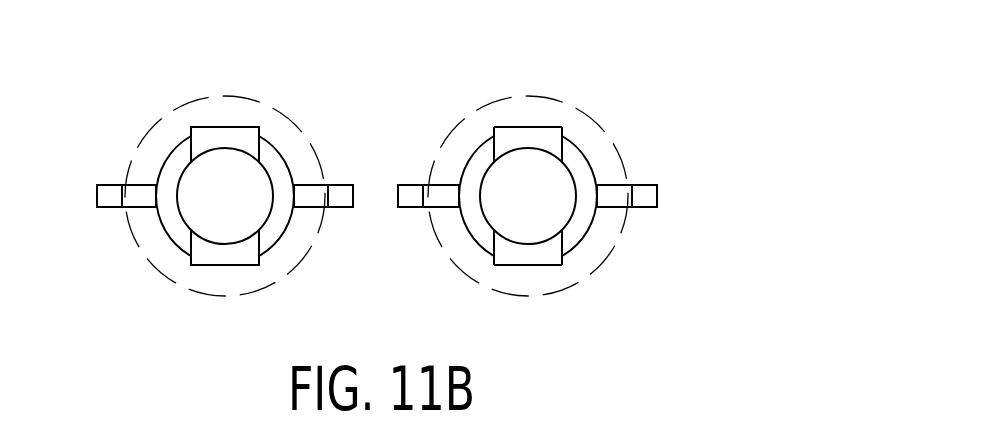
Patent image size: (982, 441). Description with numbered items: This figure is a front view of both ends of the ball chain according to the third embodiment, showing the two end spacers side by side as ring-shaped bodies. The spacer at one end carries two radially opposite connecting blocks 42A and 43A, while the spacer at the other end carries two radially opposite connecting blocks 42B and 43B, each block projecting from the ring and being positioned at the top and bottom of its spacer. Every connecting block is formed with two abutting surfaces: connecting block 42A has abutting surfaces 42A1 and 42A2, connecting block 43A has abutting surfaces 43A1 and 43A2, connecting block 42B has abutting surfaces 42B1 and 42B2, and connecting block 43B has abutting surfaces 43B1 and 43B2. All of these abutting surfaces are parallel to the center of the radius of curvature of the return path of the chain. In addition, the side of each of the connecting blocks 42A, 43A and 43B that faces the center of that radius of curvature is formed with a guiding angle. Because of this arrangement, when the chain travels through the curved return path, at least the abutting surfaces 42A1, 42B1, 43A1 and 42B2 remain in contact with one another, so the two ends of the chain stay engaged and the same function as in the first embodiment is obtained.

The connecting block 42A is at (163, 196).
The abutting surface 42A1 is at (212, 127).
The abutting surface 42A2 is at (192, 252).
The connecting block 43A is at (280, 190).
The abutting surface 43A1 is at (252, 147).
The abutting surface 43A2 is at (255, 245).
The connecting block 42B is at (528, 139).
The abutting surface 42B1 is at (582, 152).
The abutting surface 42B2 is at (494, 150).
The connecting block 43B is at (540, 257).
The abutting surface 43B1 is at (563, 243).
The abutting surface 43B2 is at (492, 248).